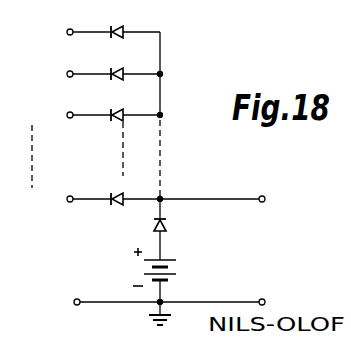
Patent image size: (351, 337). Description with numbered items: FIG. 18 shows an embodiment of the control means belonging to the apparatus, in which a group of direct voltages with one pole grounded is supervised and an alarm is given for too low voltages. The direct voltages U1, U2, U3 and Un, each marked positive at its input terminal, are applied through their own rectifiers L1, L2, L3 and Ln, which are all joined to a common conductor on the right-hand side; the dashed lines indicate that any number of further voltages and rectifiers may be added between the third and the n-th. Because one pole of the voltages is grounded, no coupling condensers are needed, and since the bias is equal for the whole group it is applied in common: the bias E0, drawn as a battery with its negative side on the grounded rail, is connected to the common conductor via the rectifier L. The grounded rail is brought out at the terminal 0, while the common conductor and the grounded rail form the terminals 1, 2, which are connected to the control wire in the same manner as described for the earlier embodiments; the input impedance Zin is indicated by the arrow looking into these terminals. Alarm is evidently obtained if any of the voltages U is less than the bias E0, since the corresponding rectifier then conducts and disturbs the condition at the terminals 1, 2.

The direct voltage U1 is at (62, 32).
The direct voltage U2 is at (62, 74).
The direct voltage U3 is at (62, 115).
The direct voltage Un is at (62, 199).
The rectifier L1 is at (135, 19).
The rectifier L2 is at (135, 63).
The rectifier L3 is at (135, 104).
The rectifier Ln is at (135, 189).
The rectifier L is at (168, 238).
The bias voltage E0 is at (189, 250).
The input impedance Zin is at (290, 244).
The grounded terminal 0 is at (104, 301).
The terminal 1 is at (219, 200).
The terminal 2 is at (220, 303).